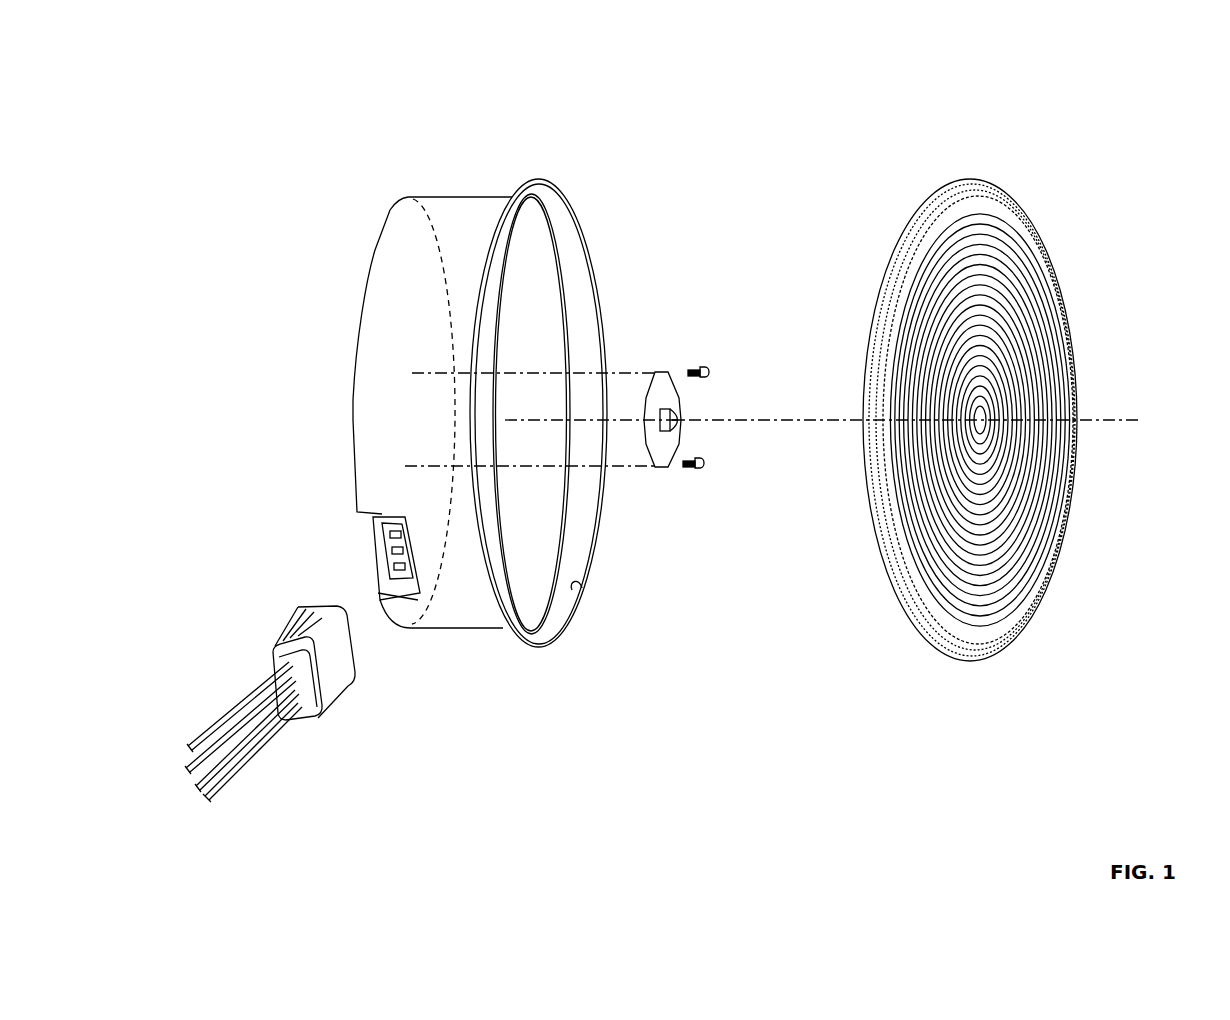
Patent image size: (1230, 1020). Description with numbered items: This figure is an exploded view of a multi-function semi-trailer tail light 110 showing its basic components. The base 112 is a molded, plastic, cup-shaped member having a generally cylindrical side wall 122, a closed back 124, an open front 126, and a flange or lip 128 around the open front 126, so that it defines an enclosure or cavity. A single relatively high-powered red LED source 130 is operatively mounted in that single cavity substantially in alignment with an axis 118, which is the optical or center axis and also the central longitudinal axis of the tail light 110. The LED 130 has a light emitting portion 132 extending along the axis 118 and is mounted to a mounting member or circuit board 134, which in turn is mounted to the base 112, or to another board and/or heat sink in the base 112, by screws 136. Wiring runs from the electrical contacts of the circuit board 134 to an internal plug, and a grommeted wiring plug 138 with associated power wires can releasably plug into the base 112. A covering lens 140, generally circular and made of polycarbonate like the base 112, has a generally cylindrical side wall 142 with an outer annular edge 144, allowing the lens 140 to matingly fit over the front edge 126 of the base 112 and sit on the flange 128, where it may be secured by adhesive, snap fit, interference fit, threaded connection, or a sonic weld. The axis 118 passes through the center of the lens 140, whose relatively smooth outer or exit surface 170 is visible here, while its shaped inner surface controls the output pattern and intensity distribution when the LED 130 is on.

The tail light 110 is at (969, 423).
The base 112 is at (481, 197).
The axis 118 is at (1112, 430).
The cylindrical side wall 122 is at (441, 218).
The closed back 124 is at (372, 250).
The open front 126 is at (582, 588).
The flange 128 is at (530, 648).
The LED source 130 is at (692, 414).
The light emitting portion 132 is at (684, 426).
The mounting member/circuit board 134 is at (664, 470).
The screws 136 is at (704, 366).
The grommeted wiring plug 138 is at (317, 614).
The covering lens 140 is at (1054, 586).
The cylindrical side wall 142 is at (895, 585).
The outer annular edge 144 is at (863, 530).
The outer or exit surface 170 is at (1013, 612).